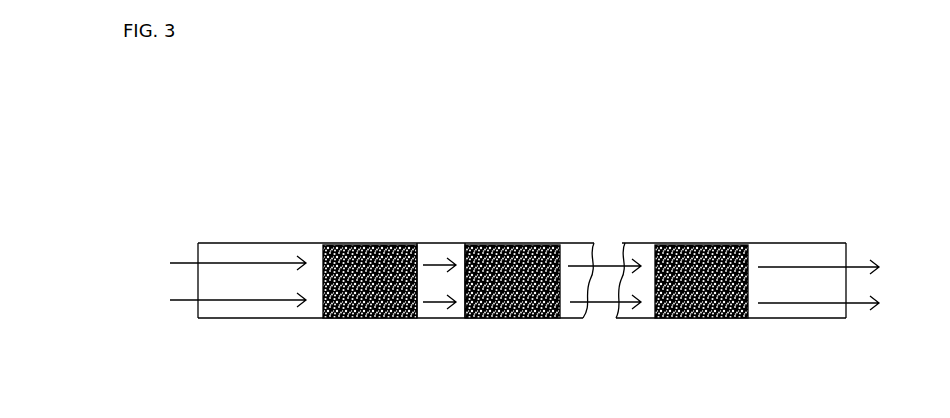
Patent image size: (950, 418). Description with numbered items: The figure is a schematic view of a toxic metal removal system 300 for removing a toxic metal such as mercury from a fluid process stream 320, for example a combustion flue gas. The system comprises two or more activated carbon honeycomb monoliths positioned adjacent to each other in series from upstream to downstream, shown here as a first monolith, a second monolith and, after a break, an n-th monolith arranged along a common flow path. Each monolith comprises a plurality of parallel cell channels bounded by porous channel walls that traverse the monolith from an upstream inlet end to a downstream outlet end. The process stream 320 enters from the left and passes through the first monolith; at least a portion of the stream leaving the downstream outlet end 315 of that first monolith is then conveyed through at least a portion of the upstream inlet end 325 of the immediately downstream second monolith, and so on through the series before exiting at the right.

The toxic metal removal system 300 is at (203, 203).
The downstream outlet end 315 is at (417, 318).
The process stream 320 is at (211, 281).
The upstream inlet end 325 is at (465, 243).